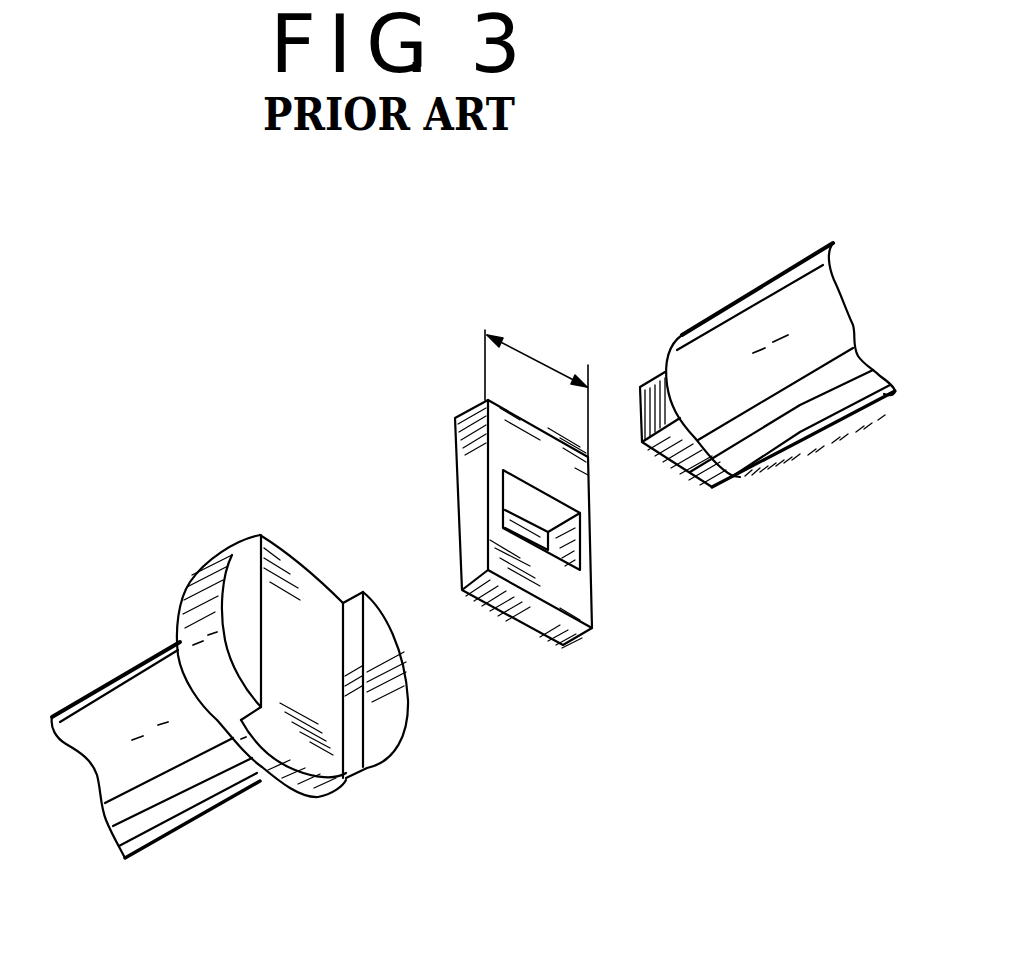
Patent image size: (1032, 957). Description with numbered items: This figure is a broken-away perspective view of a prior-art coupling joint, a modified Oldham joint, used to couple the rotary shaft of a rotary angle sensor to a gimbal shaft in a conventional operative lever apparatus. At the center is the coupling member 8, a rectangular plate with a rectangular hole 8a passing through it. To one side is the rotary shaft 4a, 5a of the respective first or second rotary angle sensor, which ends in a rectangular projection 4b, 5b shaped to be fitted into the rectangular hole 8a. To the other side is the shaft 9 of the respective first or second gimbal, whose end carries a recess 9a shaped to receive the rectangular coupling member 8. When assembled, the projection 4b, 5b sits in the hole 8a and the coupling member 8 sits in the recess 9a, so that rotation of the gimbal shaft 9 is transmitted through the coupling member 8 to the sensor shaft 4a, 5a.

The coupling member 8 is at (542, 486).
The rectangular hole 8a is at (521, 497).
The rotary shaft 4a is at (745, 400).
The rotary shaft 5a is at (745, 400).
The rectangular projection 4b is at (638, 367).
The rectangular projection 5b is at (655, 383).
The shaft 9 is at (193, 803).
The recess 9a is at (356, 748).